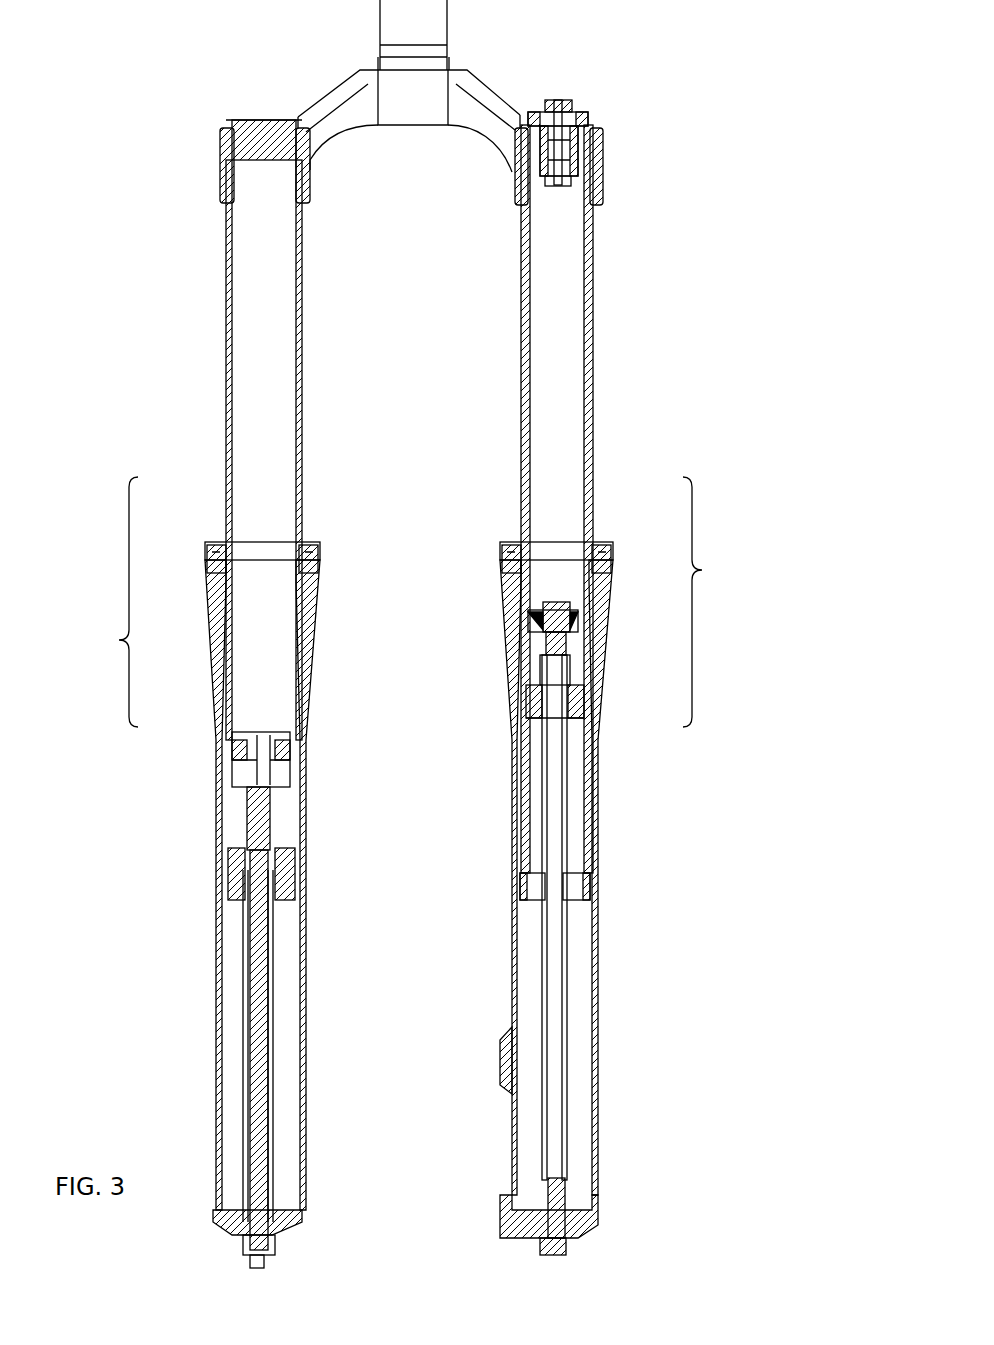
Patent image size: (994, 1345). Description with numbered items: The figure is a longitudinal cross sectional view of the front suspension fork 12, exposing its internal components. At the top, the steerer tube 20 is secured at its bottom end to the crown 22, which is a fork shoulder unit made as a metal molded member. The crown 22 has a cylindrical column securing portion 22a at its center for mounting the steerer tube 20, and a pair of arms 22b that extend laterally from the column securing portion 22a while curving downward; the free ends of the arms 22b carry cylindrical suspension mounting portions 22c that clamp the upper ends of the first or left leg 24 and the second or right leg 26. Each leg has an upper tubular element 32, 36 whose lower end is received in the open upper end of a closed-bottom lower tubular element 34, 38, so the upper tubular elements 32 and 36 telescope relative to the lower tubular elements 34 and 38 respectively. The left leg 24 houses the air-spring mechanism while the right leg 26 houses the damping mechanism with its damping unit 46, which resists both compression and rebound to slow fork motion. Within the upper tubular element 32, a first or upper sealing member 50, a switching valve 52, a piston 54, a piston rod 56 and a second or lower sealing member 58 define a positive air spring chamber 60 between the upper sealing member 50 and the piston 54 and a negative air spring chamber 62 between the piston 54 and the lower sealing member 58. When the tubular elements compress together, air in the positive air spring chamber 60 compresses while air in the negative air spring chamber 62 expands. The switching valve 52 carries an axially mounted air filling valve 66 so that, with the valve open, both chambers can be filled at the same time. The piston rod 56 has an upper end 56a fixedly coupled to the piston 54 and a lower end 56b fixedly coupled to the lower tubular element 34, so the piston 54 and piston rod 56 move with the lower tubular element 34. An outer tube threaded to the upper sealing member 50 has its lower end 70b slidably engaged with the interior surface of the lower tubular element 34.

The front suspension fork 12 is at (170, 46).
The steerer tube 20 is at (370, 12).
The crown 22 is at (412, 111).
The column securing portion 22a is at (412, 97).
The arms 22b is at (350, 140).
The suspension mounting portions 22c is at (220, 178).
The first or left leg 24 is at (708, 602).
The second or right leg 26 is at (112, 602).
The upper tubular element 32 is at (594, 497).
The lower tubular element 34 is at (597, 716).
The upper tubular element 36 is at (226, 497).
The lower tubular element 38 is at (220, 718).
The damping unit 46 is at (230, 835).
The first or upper sealing member 50 is at (593, 144).
The switching valve 52 is at (599, 121).
The piston 54 is at (540, 632).
The piston rod 56 is at (568, 1000).
The first or upper end of piston rod 56a is at (560, 602).
The second or lower end of piston rod 56b is at (552, 1188).
The second or lower sealing member 58 is at (537, 718).
The positive air spring chamber 60 is at (558, 338).
The negative air spring chamber 62 is at (538, 672).
The air filling valve 66 is at (560, 100).
The lower end of outer tube 70b is at (577, 890).